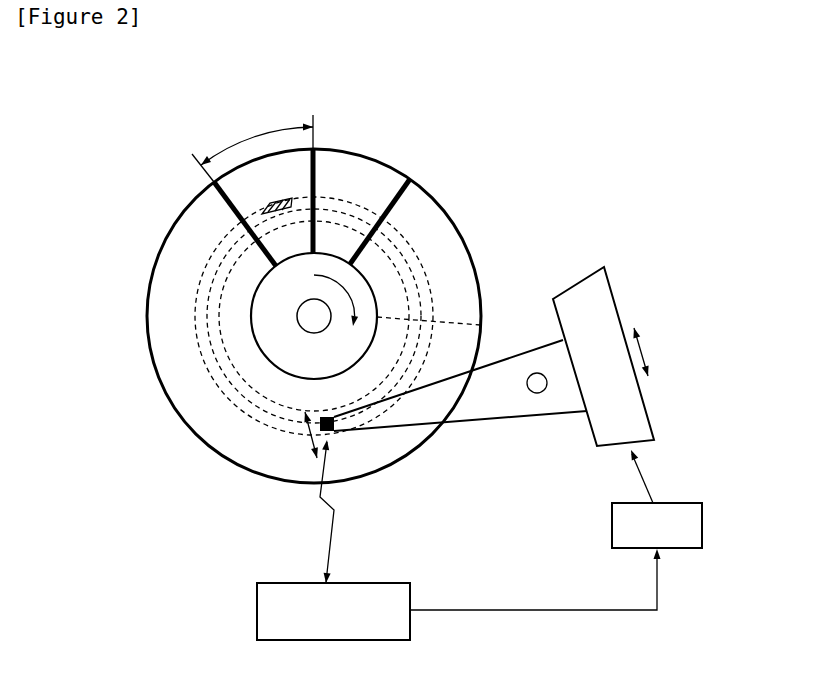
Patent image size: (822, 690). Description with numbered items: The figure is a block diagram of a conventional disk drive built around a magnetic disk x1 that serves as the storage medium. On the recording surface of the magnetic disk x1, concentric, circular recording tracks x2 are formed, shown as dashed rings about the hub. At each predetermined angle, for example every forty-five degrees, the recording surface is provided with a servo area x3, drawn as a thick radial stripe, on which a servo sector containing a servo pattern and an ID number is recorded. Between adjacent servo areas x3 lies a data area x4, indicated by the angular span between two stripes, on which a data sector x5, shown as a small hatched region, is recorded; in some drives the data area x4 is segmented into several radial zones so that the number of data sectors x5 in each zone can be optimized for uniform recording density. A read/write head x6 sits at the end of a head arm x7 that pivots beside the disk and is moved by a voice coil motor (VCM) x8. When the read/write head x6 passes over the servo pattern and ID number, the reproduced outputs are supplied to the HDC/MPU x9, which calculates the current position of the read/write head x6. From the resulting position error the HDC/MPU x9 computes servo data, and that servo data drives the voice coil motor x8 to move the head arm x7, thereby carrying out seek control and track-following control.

The magnetic disk x1 is at (198, 432).
The recording tracks x2 is at (415, 253).
The servo area x3 is at (315, 178).
The data area x4 is at (248, 142).
The data sector x5 is at (262, 213).
The read/write head x6 is at (332, 432).
The head arm x7 is at (493, 418).
The voice coil motor (VCM) x8 is at (612, 527).
The HDC/MPU x9 is at (257, 612).